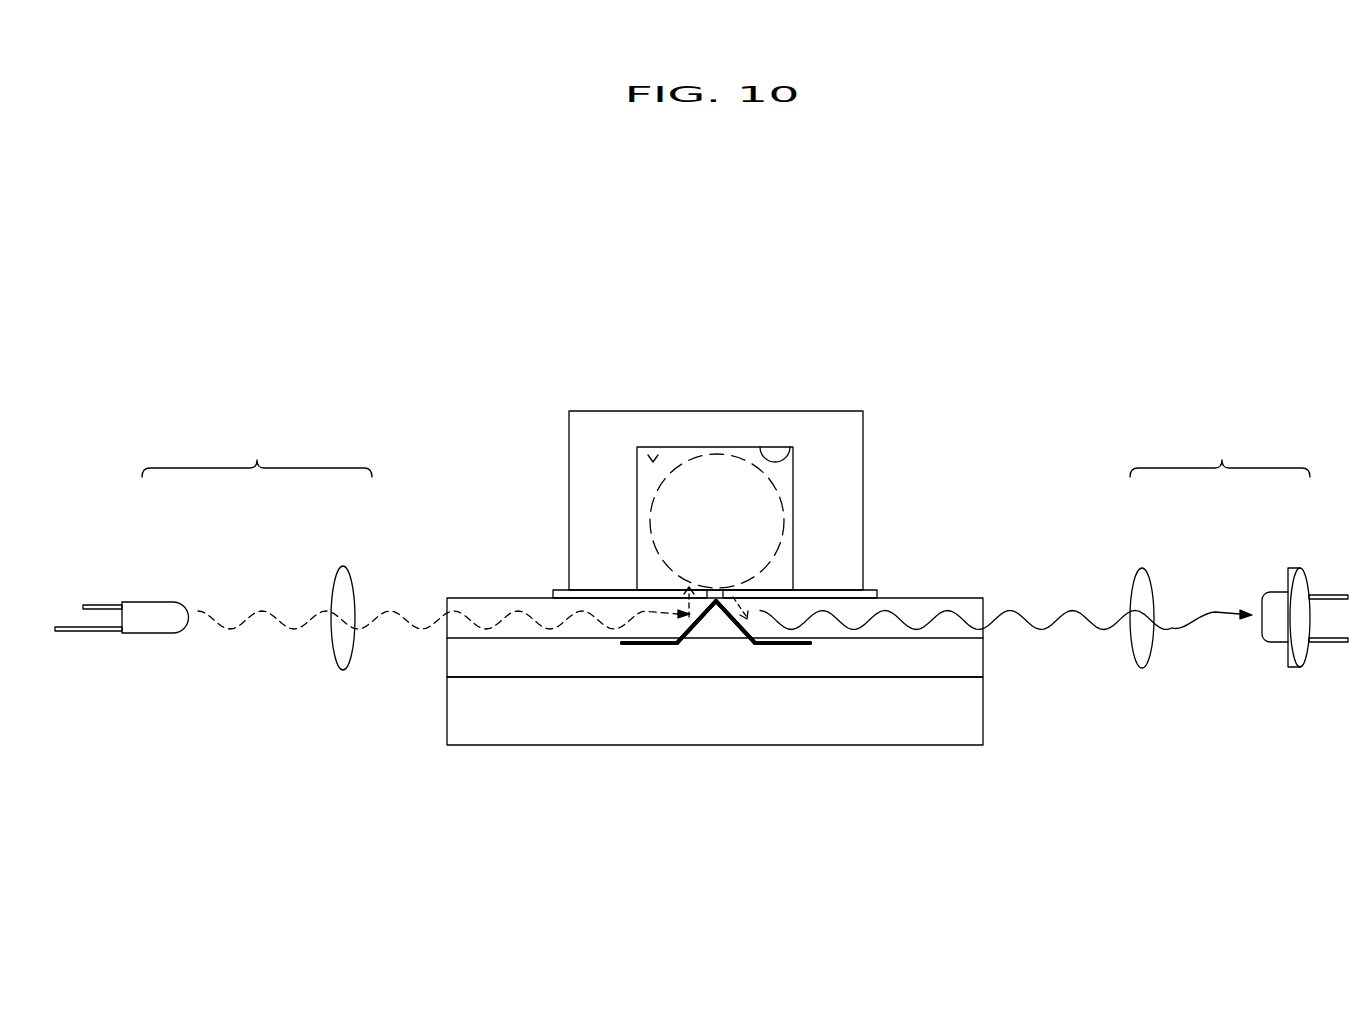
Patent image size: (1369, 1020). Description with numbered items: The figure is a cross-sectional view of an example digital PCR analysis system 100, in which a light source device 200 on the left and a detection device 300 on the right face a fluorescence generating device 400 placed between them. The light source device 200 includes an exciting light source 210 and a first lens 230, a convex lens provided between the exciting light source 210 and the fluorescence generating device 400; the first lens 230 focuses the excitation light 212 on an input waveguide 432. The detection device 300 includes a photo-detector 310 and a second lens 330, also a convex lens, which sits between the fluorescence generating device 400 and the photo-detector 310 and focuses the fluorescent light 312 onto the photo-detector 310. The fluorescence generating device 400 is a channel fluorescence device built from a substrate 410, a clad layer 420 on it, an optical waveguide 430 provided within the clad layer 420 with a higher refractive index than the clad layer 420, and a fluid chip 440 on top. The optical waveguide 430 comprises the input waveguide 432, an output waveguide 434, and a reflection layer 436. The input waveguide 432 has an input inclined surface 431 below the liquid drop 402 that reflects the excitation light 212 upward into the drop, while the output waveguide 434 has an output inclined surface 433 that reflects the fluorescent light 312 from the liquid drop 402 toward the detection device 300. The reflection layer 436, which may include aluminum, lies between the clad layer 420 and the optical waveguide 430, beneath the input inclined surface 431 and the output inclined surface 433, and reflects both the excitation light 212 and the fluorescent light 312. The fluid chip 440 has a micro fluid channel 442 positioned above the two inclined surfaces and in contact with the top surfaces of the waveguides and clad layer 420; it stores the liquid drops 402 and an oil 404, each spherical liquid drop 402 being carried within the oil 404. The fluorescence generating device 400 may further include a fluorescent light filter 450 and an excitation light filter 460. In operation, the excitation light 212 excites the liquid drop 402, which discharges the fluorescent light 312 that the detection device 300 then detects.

The digital PCR analysis system 100 is at (1088, 366).
The light source device 200 is at (257, 454).
The exciting light source 210 is at (150, 617).
The excitation light 212 is at (288, 632).
The first lens 230 is at (345, 566).
The detection device 300 is at (1220, 454).
The photo-detector 310 is at (1280, 598).
The fluorescent light 312 is at (1178, 632).
The second lens 330 is at (1142, 568).
The fluorescence generating device 400 is at (858, 325).
The liquid drop 402 is at (720, 480).
The oil 404 is at (653, 460).
The substrate 410 is at (970, 713).
The clad layer 420 is at (970, 659).
The optical waveguide 430 is at (455, 520).
The input inclined surface 431 is at (675, 631).
The input waveguide 432 is at (622, 607).
The output inclined surface 433 is at (755, 631).
The output waveguide 434 is at (822, 605).
The reflection layer 436 is at (720, 604).
The fluid chip 440 is at (608, 425).
The micro fluid channel 442 is at (787, 445).
The fluorescent light filter 450 is at (557, 598).
The excitation light filter 460 is at (875, 598).